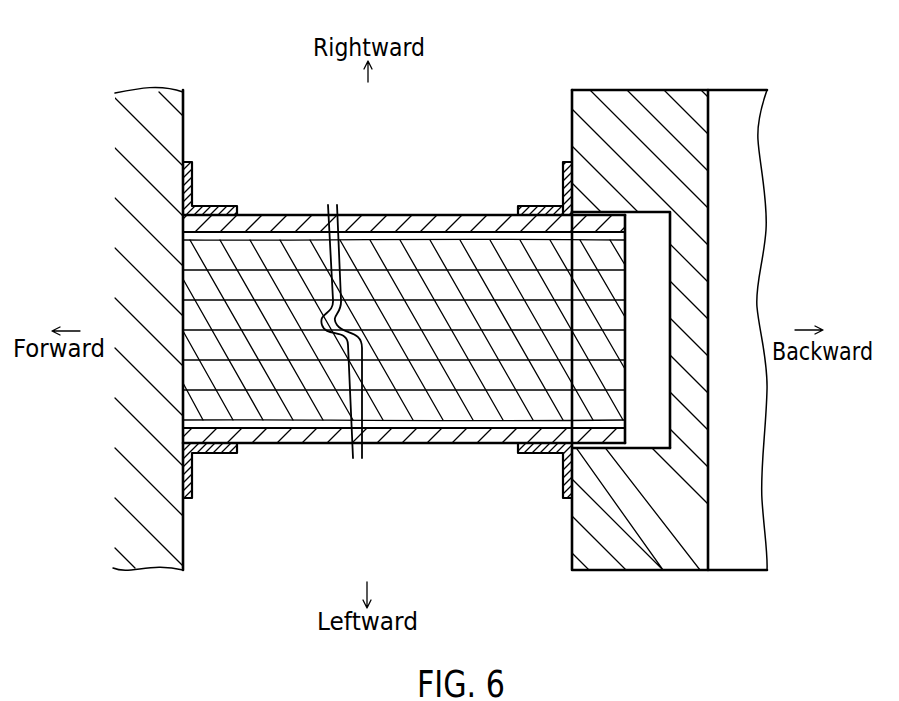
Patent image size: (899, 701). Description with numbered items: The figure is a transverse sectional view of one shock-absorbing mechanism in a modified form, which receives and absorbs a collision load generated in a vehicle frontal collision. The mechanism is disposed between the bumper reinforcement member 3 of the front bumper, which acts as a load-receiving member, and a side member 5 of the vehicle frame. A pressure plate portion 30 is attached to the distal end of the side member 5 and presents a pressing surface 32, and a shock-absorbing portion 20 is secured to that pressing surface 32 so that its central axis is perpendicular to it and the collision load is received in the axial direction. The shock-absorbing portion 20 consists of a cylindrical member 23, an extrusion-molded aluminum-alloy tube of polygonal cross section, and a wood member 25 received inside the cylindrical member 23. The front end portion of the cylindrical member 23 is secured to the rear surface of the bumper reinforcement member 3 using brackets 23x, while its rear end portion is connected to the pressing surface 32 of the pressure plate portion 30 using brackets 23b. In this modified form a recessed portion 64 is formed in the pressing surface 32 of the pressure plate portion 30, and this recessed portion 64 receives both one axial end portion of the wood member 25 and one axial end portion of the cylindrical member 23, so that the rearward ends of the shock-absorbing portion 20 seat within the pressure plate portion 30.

The bumper reinforcement member 3 is at (160, 423).
The side member 5 is at (736, 112).
The shock-absorbing portion 20 is at (404, 326).
The cylindrical member 23 is at (404, 330).
The bracket 23b is at (541, 205).
The bracket 23x is at (218, 207).
The wood member 25 is at (395, 345).
The pressure plate portion 30 is at (641, 82).
The pressing surface 32 is at (572, 107).
The recessed portion 64 is at (700, 265).